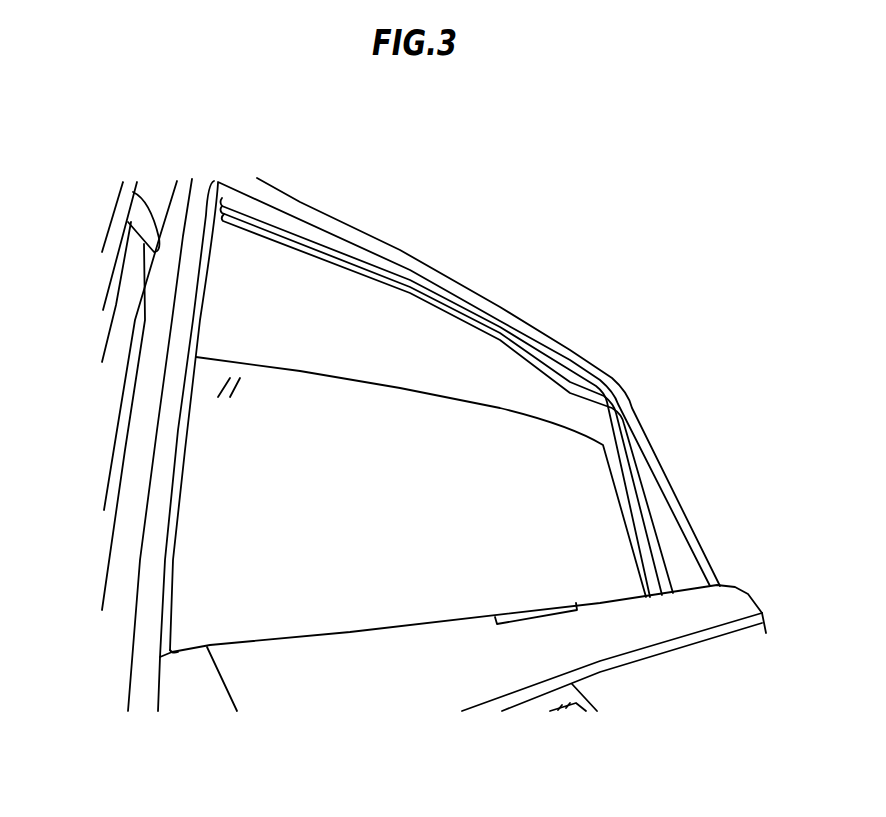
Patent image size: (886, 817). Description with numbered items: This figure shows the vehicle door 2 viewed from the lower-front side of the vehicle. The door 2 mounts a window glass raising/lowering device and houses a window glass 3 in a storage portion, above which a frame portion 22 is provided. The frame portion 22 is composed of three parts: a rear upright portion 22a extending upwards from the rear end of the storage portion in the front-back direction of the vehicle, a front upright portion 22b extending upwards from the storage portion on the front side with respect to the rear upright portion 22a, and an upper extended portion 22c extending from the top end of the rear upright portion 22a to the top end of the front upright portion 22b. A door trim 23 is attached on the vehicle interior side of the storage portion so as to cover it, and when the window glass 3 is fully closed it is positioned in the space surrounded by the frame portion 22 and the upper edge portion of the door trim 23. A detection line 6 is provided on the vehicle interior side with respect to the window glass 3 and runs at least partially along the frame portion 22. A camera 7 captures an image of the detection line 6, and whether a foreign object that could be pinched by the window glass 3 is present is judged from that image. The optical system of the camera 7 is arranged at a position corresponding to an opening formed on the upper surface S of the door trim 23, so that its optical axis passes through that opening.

The door 2 is at (646, 277).
The window glass 3 is at (442, 413).
The detection line 6 is at (440, 311).
The camera 7 is at (534, 610).
The frame portion 22 is at (625, 376).
The rear upright portion 22a is at (680, 510).
The front upright portion 22b is at (115, 204).
The upper extended portion 22c is at (326, 212).
The door trim 23 is at (742, 588).
The upper surface S is at (202, 642).